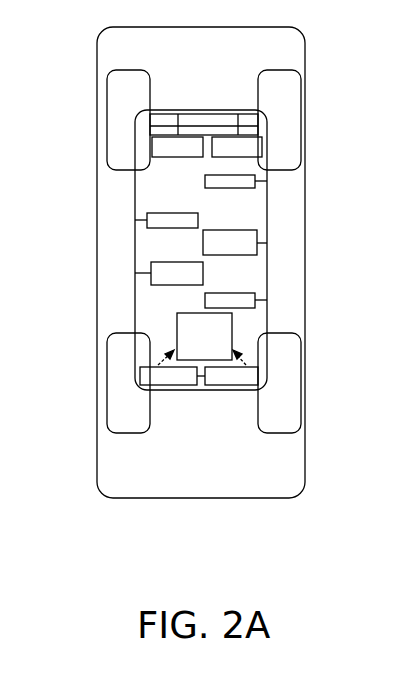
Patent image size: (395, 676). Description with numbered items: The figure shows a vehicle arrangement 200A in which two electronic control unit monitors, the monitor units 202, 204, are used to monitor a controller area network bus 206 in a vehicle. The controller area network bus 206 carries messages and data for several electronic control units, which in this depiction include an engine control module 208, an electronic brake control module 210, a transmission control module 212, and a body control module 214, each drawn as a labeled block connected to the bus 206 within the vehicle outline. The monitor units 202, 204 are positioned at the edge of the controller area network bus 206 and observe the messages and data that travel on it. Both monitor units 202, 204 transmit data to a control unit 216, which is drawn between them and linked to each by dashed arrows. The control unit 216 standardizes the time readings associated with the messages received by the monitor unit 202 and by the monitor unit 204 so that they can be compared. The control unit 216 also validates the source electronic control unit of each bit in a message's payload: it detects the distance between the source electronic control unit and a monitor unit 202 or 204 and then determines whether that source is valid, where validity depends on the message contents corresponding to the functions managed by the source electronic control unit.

The vehicle system 200A is at (232, 594).
The monitor unit 202 is at (141, 372).
The monitor unit 204 is at (259, 372).
The controller area network bus 206 is at (137, 245).
The engine control module 208 is at (152, 141).
The electronic brake control module 210 is at (162, 286).
The transmission control module 212 is at (263, 152).
The body control module 214 is at (254, 230).
The control unit 216 is at (232, 320).